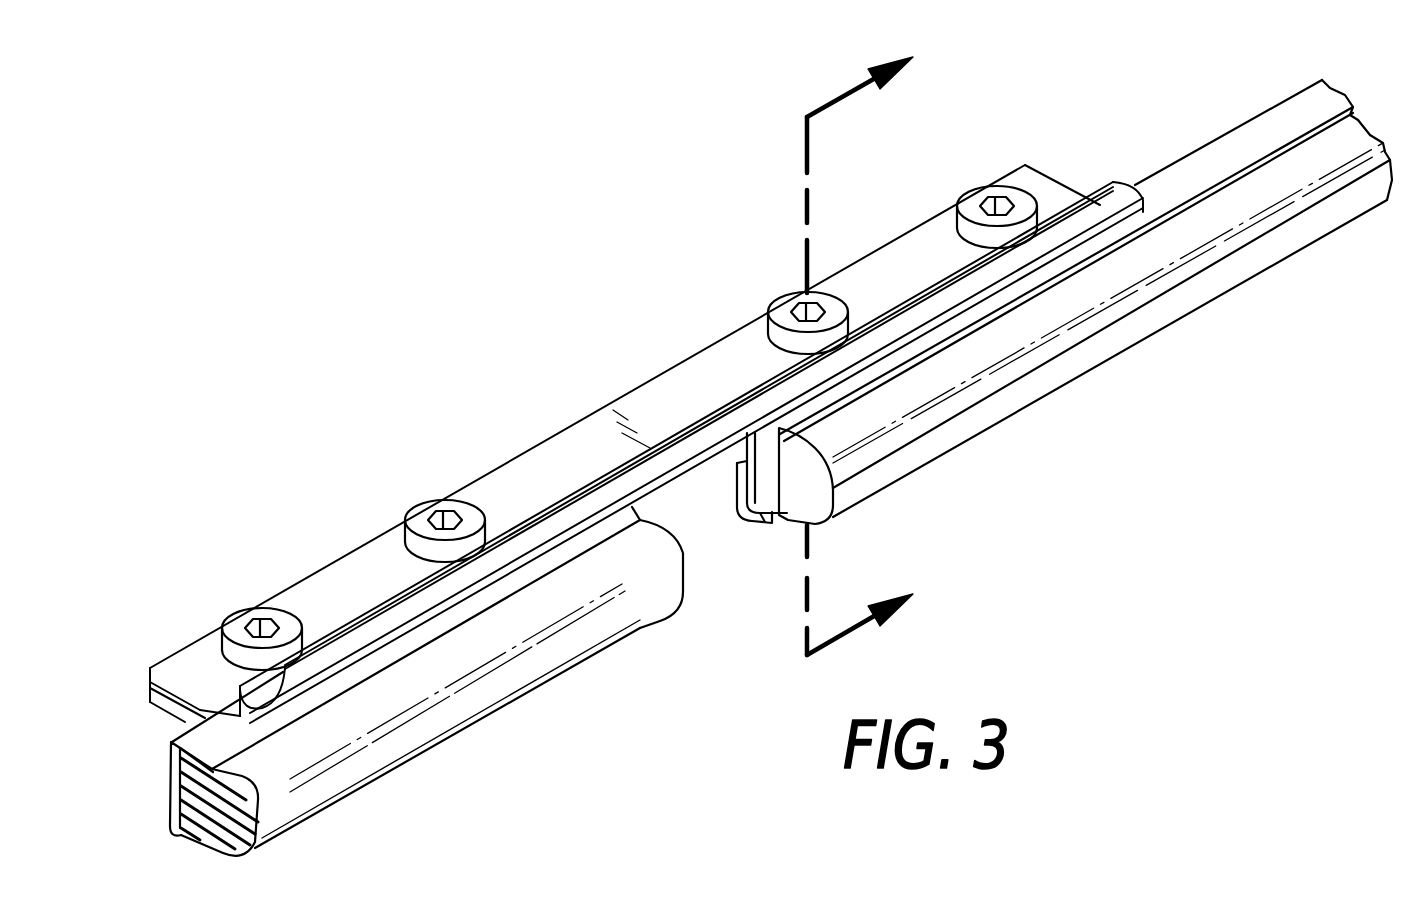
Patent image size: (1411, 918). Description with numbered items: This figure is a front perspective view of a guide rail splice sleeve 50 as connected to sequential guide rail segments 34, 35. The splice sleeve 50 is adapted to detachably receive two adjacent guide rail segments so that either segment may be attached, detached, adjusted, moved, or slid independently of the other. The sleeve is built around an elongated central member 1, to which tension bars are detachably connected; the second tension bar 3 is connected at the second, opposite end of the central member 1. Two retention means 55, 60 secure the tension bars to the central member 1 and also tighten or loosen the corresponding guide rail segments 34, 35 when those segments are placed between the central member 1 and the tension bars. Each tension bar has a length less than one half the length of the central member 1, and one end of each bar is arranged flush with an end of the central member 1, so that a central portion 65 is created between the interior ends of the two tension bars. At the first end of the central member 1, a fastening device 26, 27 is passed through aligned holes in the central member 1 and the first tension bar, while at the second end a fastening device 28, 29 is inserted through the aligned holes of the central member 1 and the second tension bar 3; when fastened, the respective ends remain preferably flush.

The elongated central member 1 is at (593, 430).
The second tension bar 3 is at (733, 512).
The fastening device 26 is at (248, 612).
The fastening device 27 is at (438, 507).
The fastening device 28 is at (796, 305).
The fastening device 29 is at (980, 195).
The guide rail segment 34 is at (493, 692).
The guide rail segment 35 is at (1118, 345).
The guide rail splice sleeve 50 is at (610, 290).
The retention means 55 is at (300, 455).
The retention means 60 is at (826, 78).
The central portion 65 is at (722, 598).